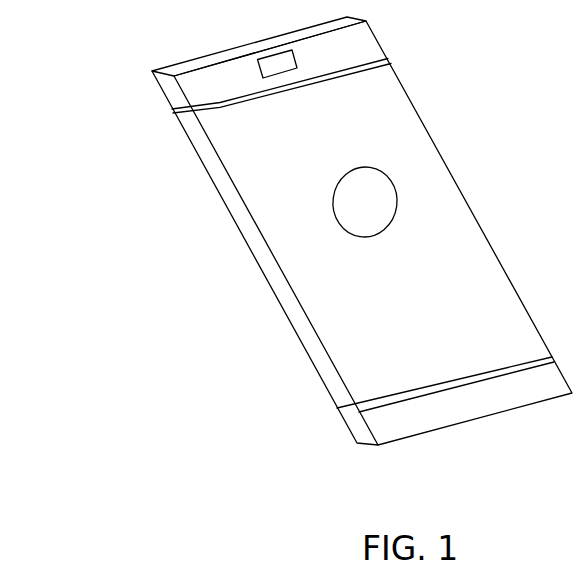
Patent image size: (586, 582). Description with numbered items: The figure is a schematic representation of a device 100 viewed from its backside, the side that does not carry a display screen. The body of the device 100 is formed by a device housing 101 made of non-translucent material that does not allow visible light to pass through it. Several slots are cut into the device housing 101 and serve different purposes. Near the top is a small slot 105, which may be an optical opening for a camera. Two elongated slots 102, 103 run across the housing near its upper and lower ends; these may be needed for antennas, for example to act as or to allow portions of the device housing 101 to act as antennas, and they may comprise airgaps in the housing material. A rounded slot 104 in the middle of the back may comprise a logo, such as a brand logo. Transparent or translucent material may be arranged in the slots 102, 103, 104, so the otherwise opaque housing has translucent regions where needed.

The device 100 is at (97, 91).
The device housing 101 is at (484, 229).
The slot 102 is at (389, 61).
The slot 103 is at (337, 408).
The slot 104 is at (348, 176).
The slot 105 is at (271, 55).